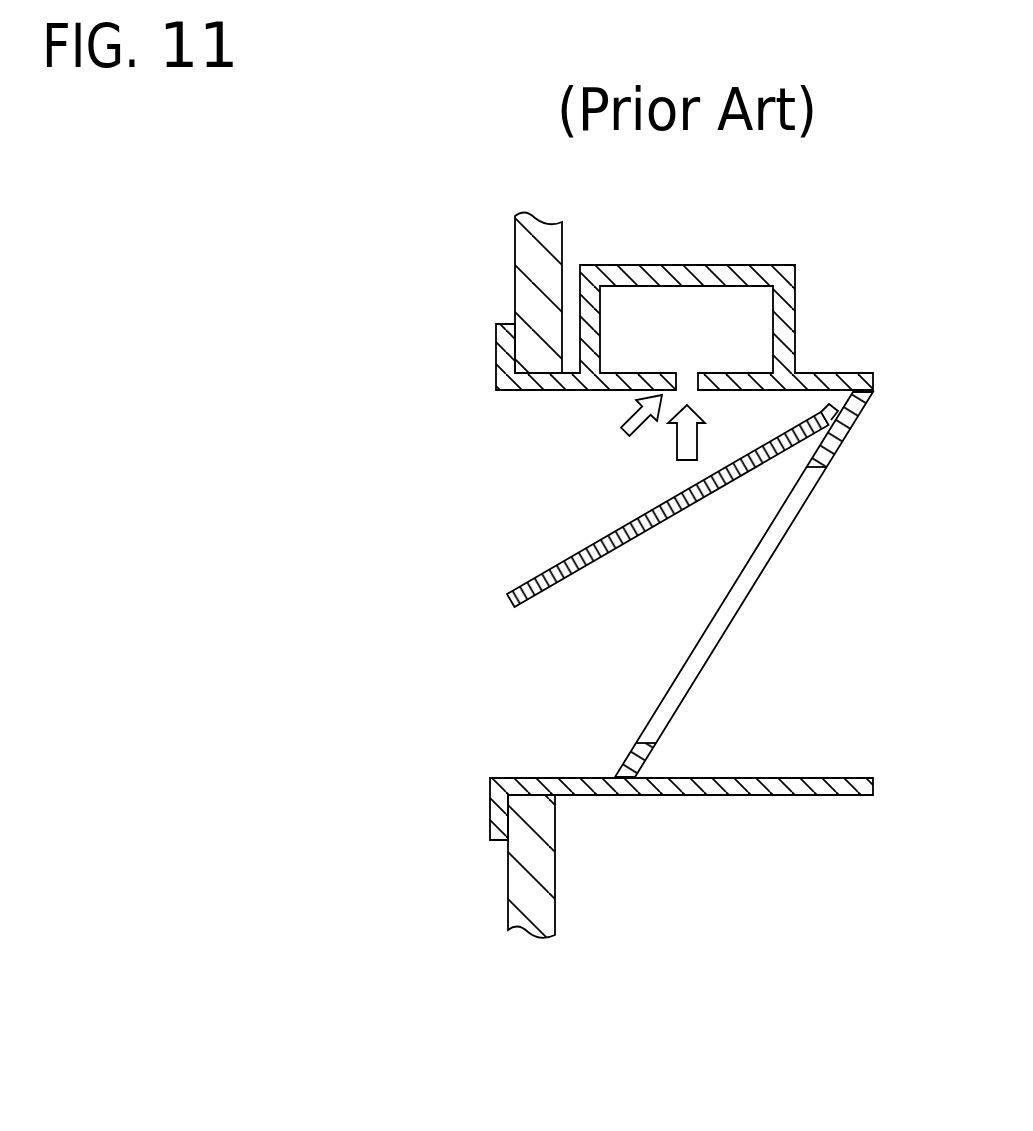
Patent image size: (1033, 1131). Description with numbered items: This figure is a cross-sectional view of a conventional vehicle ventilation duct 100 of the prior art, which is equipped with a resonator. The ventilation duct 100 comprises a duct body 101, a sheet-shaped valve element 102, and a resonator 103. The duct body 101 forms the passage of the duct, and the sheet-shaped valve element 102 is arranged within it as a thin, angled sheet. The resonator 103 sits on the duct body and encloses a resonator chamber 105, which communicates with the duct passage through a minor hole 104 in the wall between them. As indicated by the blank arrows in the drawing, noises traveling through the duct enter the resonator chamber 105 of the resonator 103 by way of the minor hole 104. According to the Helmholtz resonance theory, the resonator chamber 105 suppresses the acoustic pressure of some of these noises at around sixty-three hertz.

The ventilation duct 100 is at (360, 393).
The duct body 101 is at (538, 786).
The sheet-shaped valve element 102 is at (570, 563).
The resonator 103 is at (737, 277).
The minor hole 104 is at (688, 383).
The resonator chamber 105 is at (730, 333).